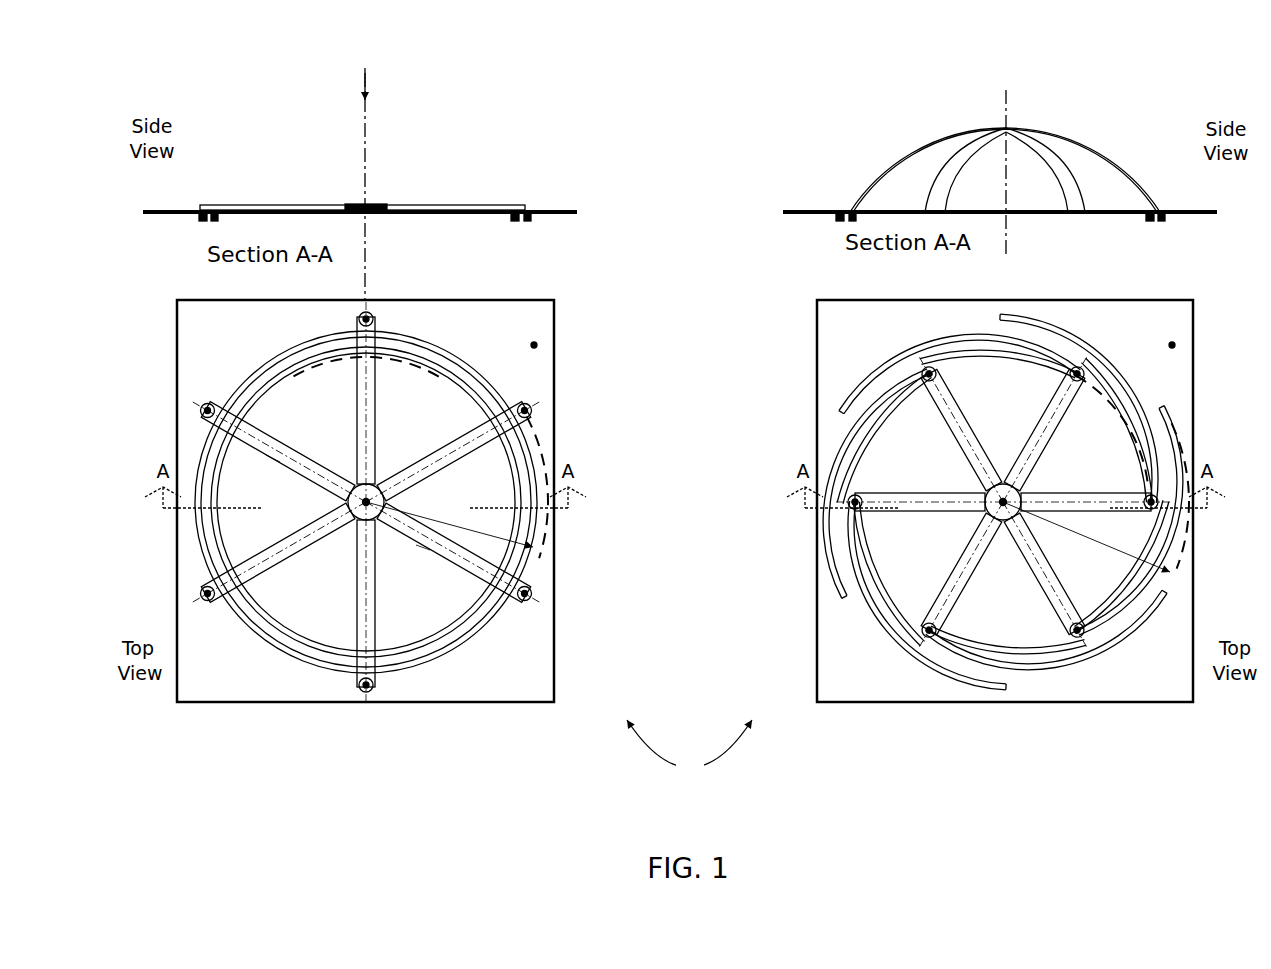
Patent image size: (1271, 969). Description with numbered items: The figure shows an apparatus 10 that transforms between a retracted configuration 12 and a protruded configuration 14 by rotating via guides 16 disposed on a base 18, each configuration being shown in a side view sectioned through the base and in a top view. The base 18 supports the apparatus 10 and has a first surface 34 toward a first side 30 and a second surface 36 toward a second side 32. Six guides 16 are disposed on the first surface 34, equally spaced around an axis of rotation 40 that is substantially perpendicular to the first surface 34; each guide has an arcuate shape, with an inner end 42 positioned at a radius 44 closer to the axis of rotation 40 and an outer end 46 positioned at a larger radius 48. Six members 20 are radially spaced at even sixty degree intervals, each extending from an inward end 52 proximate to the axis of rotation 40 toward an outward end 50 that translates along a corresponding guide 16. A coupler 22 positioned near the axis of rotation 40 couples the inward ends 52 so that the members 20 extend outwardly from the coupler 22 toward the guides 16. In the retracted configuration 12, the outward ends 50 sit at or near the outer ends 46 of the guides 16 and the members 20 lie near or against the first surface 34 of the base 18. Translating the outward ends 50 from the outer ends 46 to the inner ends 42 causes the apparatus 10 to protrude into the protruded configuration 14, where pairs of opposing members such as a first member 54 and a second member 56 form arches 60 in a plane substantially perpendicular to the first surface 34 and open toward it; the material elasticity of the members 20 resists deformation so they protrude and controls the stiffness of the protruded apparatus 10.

The apparatus 10 is at (689, 748).
The retracted configuration 12 is at (367, 785).
The protruded configuration 14 is at (1005, 785).
The guides 16 is at (208, 226).
The base 18 is at (138, 207).
The members 20 is at (275, 203).
The coupler 22 is at (387, 198).
The first side 30 is at (1000, 100).
The second side 32 is at (385, 228).
The first surface 34 is at (186, 207).
The second surface 36 is at (173, 220).
The axis of rotation 40 is at (372, 158).
The inner ends of guides 42 is at (295, 380).
The radius 44 is at (316, 376).
The outer ends of guides 46 is at (378, 319).
The radius 48 is at (768, 537).
The outward ends of members 50 is at (357, 320).
The inward ends of members 52 is at (682, 499).
The first member 54 is at (421, 547).
The second member 56 is at (271, 459).
The arches 60 is at (905, 155).